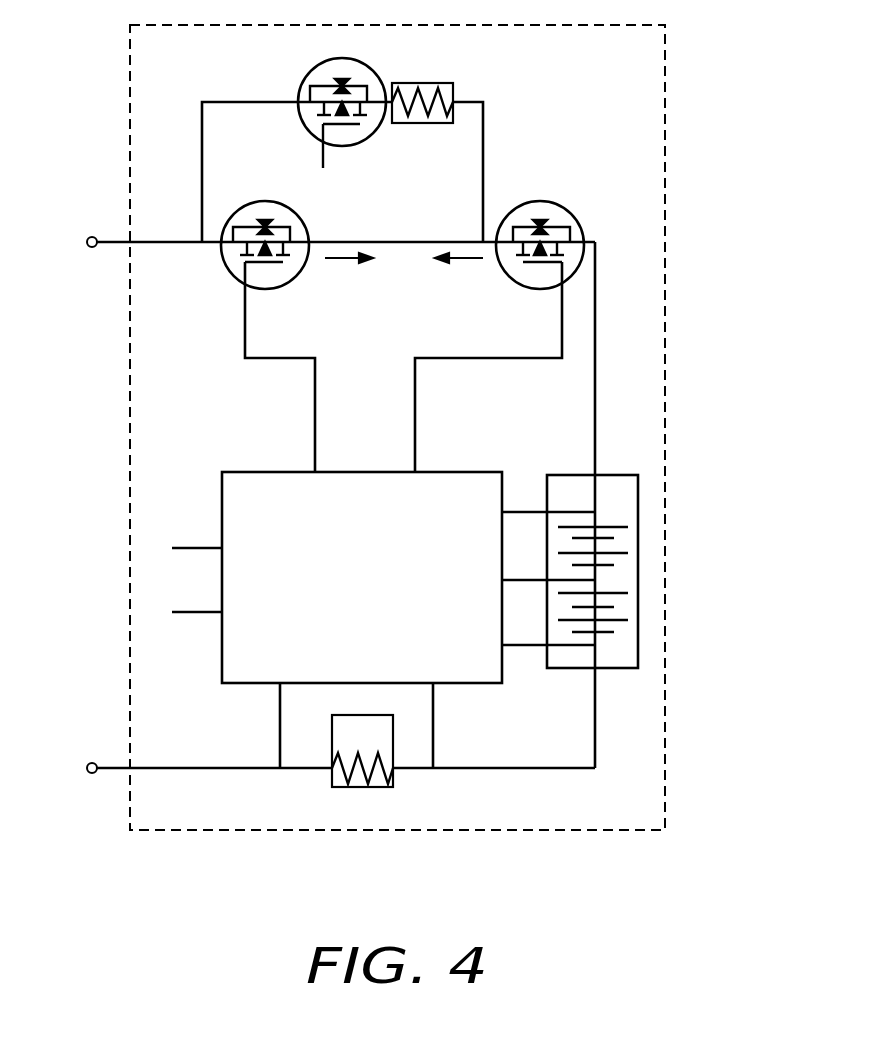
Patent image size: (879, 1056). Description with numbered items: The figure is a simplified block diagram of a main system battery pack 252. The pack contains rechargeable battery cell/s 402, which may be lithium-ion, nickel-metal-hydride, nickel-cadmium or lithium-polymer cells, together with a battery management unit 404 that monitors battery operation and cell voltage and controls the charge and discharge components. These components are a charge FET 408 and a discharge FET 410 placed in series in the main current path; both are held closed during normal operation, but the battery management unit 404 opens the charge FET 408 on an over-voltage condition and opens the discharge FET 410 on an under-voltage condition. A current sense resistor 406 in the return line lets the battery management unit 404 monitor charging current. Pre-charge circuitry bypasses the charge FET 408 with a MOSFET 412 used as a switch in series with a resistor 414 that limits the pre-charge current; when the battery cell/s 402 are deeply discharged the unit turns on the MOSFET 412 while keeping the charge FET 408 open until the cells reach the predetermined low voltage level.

The main system battery pack 252 is at (665, 190).
The battery cell/s 402 is at (563, 475).
The battery management unit 404 is at (277, 470).
The current sense resistor 406 is at (360, 787).
The charge FET 408 is at (237, 276).
The discharge FET 410 is at (533, 288).
The MOSFET 412 is at (306, 84).
The resistor 414 is at (420, 84).